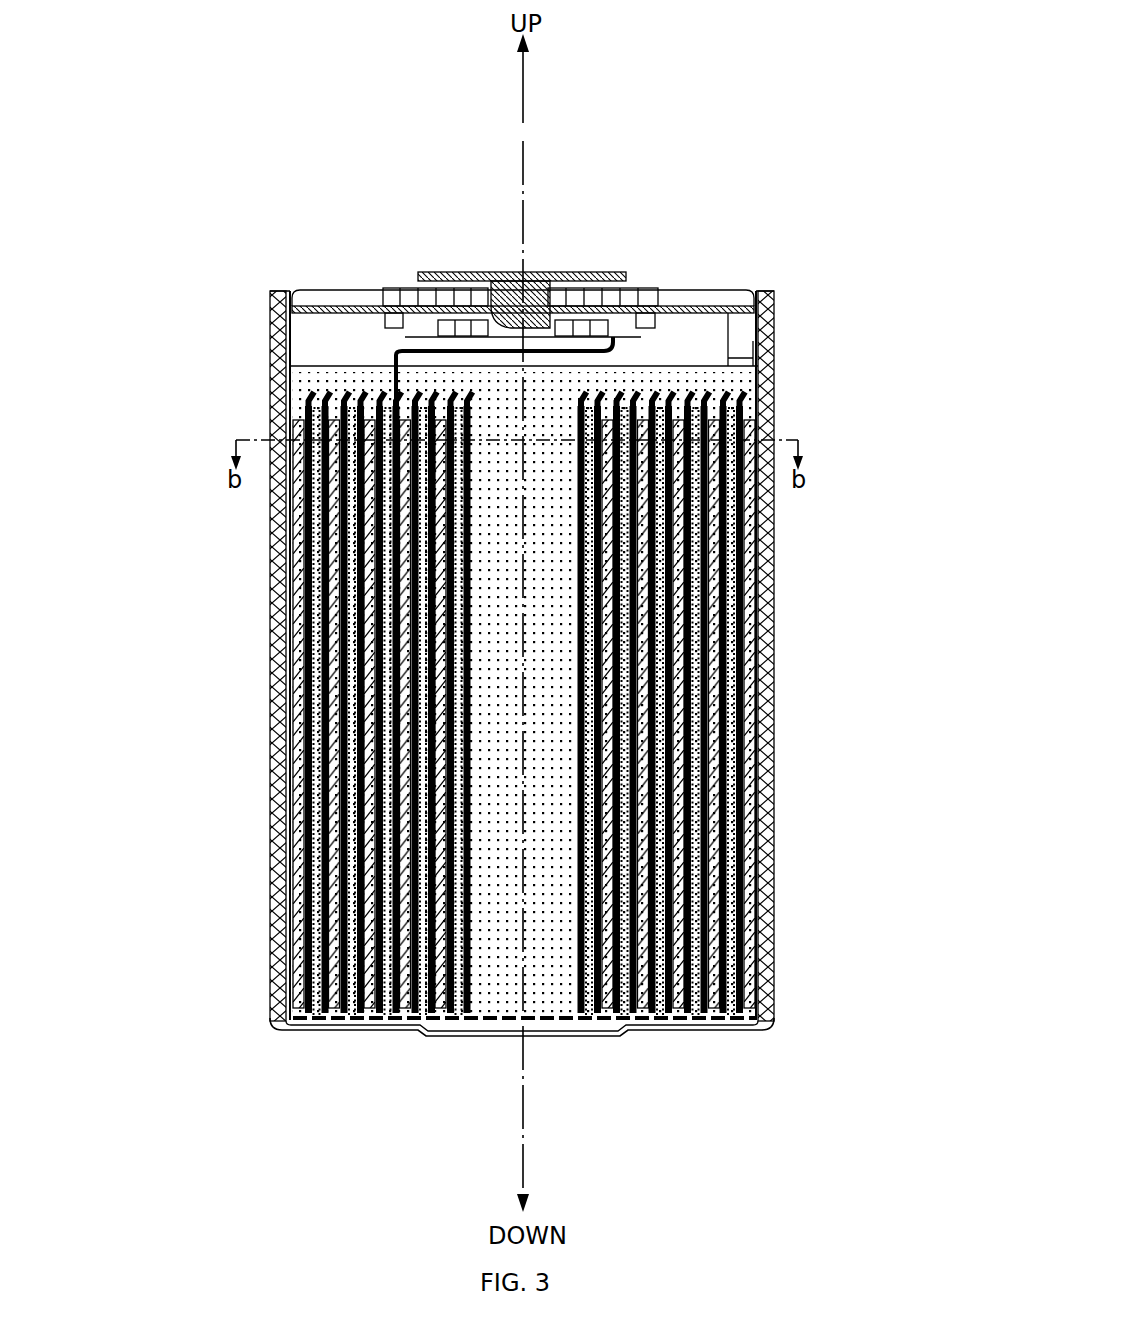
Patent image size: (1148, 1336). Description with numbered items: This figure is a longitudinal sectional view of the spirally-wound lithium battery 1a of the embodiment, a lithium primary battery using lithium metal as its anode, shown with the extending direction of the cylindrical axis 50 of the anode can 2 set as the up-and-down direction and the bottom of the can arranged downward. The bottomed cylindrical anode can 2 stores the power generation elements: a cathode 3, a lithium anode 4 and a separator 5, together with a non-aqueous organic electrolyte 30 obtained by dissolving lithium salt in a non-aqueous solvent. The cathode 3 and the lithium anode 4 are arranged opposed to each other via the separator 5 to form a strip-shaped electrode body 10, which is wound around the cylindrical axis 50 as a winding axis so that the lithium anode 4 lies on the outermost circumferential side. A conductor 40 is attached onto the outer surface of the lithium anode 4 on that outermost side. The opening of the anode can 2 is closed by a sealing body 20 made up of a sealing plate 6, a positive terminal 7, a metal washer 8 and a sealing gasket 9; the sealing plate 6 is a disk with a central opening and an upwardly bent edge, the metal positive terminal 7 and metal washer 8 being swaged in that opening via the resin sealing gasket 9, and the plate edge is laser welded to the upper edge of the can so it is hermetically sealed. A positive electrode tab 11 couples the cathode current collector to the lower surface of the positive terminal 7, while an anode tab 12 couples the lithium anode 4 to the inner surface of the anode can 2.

The lithium battery 1a is at (264, 106).
The anode can 2 is at (268, 576).
The cathode 3 is at (300, 758).
The lithium anode 4 is at (268, 826).
The separator 5 is at (520, 701).
The sealing plate 6 is at (337, 280).
The positive terminal 7 is at (443, 264).
The metal washer 8 is at (511, 263).
The sealing gasket 9 is at (397, 280).
The electrode body 10 is at (490, 701).
The positive electrode tab 11 is at (375, 345).
The anode tab 12 is at (755, 358).
The sealing body 20 is at (497, 239).
The non-aqueous organic electrolyte 30 is at (484, 688).
The conductor 40 is at (276, 706).
The cylindrical axis 50 is at (520, 148).